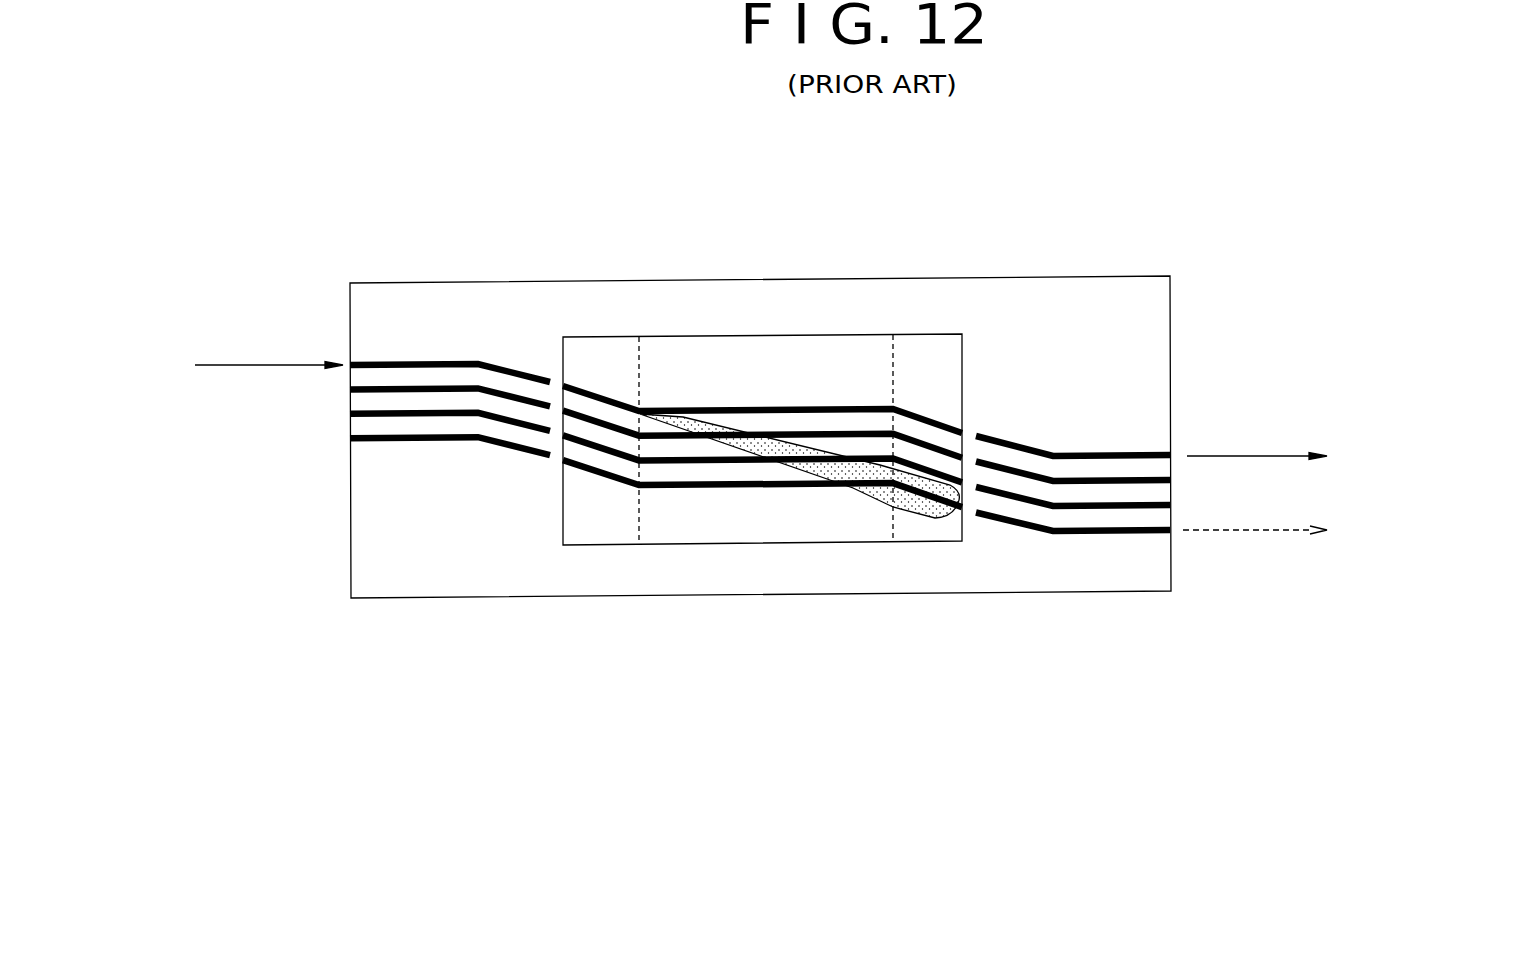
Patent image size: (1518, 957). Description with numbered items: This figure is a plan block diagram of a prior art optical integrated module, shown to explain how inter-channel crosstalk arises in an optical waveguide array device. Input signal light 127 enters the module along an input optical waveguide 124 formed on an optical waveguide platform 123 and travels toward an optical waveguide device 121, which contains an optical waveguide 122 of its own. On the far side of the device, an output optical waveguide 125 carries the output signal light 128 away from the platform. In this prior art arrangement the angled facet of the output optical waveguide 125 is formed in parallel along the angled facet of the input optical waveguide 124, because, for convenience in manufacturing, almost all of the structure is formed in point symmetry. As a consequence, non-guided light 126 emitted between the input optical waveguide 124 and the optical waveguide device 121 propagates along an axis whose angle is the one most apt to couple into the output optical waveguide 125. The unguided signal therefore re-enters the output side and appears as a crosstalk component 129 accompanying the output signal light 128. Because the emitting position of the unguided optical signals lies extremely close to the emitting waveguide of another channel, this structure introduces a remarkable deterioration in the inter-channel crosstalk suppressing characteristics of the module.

The optical waveguide device 121 is at (639, 333).
The optical waveguide 122 is at (810, 363).
The optical waveguide platform 123 is at (367, 281).
The input optical waveguide 124 is at (443, 325).
The output optical waveguide 125 is at (1098, 437).
The non-guided light 126 is at (913, 503).
The input signal light 127 is at (243, 404).
The output signal light 128 is at (1232, 454).
The crosstalk component 129 is at (1248, 535).